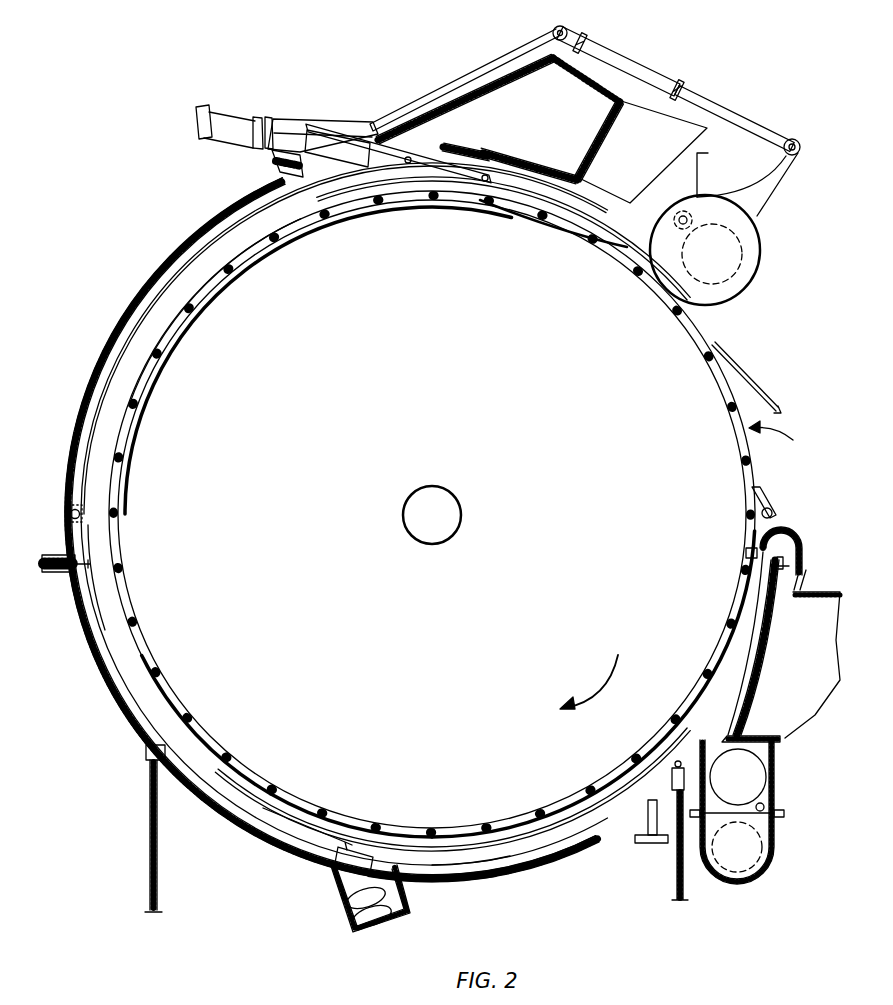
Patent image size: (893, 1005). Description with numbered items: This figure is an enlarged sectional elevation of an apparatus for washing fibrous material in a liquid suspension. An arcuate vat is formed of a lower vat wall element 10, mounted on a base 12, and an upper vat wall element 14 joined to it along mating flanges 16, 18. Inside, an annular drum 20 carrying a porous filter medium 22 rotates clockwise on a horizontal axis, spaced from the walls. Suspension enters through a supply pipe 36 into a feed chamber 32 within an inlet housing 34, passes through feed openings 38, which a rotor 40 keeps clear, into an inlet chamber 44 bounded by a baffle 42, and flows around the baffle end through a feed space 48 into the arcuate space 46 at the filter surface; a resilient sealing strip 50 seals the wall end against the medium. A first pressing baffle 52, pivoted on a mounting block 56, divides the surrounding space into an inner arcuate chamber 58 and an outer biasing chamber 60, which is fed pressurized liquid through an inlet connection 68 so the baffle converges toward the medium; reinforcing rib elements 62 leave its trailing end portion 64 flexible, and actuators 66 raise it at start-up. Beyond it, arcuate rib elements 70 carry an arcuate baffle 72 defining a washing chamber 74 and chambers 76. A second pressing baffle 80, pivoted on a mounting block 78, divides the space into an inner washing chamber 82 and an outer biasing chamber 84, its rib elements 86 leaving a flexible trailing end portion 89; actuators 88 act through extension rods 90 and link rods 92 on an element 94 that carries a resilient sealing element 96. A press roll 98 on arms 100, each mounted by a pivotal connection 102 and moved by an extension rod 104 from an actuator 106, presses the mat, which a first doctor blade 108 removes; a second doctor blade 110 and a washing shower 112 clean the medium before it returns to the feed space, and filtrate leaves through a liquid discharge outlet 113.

The lower vat wall element 10 is at (455, 890).
The base 12 is at (150, 868).
The upper vat wall element 14 is at (78, 427).
The mating flange 16 is at (62, 577).
The mating flange 18 is at (55, 557).
The drum 20 is at (777, 434).
The filter medium 22 is at (722, 385).
The feed chamber 32 is at (783, 812).
The inlet housing 34 is at (775, 855).
The supply pipe 36 is at (722, 865).
The feed openings 38 is at (700, 738).
The rotor 40 is at (757, 770).
The baffle 42 is at (745, 660).
The inlet chamber 44 is at (775, 630).
The arcuate space 46 is at (755, 583).
The feed space 48 is at (782, 548).
The resilient sealing strip 50 is at (746, 553).
The first pressing baffle 52 is at (563, 845).
The mounting block 56 is at (668, 758).
The inner arcuate chamber 58 is at (478, 843).
The outer biasing chamber 60 is at (497, 880).
The reinforcing rib elements 62 is at (312, 848).
The trailing end portion 64 is at (208, 752).
The pressure fluid operated actuators 66 is at (352, 905).
The inlet connection 68 is at (648, 838).
The arcuate rib elements 70 is at (148, 760).
The arcuate baffle 72 is at (108, 622).
The arcuate washing chamber 74 is at (138, 659).
The arcuate chambers 76 is at (118, 694).
The mounting block 78 is at (66, 512).
The second pressing baffle 80 is at (148, 353).
The inner arcuate washing chamber 82 is at (175, 298).
The outer biasing arcuate chamber 84 is at (138, 283).
The reinforcing rib elements 86 is at (113, 352).
The pressure fluid operated actuators 88 is at (228, 105).
The trailing end portion 89 is at (622, 254).
The extension rods 90 is at (285, 126).
The link rod 92 is at (432, 172).
The element 94 is at (492, 192).
The resilient sealing element 96 is at (592, 225).
The press roll 98 is at (755, 245).
The arms 100 is at (775, 185).
The pivotal connection 102 is at (697, 190).
The extension rod 104 is at (757, 93).
The pressure fluid operated actuator 106 is at (648, 58).
The first doctor blade 108 is at (714, 346).
The second doctor blade 110 is at (758, 497).
The washing shower 112 is at (757, 513).
The liquid discharge outlet 113 is at (440, 530).